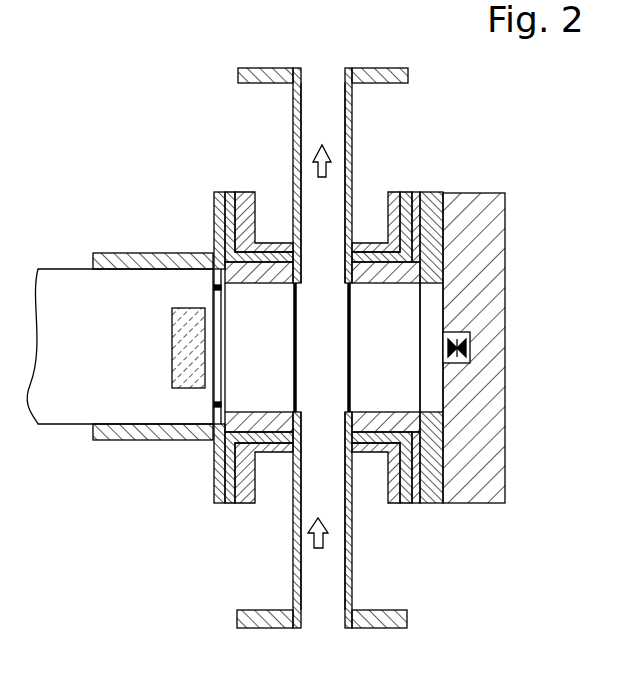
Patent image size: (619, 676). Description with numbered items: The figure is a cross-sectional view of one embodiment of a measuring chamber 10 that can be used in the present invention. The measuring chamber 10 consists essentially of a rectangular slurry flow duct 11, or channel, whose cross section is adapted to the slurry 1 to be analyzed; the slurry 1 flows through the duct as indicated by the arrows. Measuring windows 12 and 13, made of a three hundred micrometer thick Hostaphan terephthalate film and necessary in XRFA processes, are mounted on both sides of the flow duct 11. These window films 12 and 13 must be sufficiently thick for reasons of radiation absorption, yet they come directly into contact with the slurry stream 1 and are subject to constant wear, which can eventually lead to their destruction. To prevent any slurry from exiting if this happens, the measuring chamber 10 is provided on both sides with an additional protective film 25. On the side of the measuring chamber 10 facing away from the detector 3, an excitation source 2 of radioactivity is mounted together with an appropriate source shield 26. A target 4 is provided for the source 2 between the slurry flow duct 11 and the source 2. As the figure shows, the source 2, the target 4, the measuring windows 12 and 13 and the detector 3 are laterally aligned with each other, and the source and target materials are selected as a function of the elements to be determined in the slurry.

The slurry 1 is at (314, 542).
The excitation source 2 is at (471, 346).
The detector 3 is at (183, 340).
The target 4 is at (444, 372).
The measuring chamber 10 is at (346, 533).
The slurry flow duct 11 is at (328, 582).
The measuring window 12 is at (293, 378).
The measuring window 13 is at (336, 377).
The protective film 25 is at (226, 310).
The source shield 26 is at (498, 218).